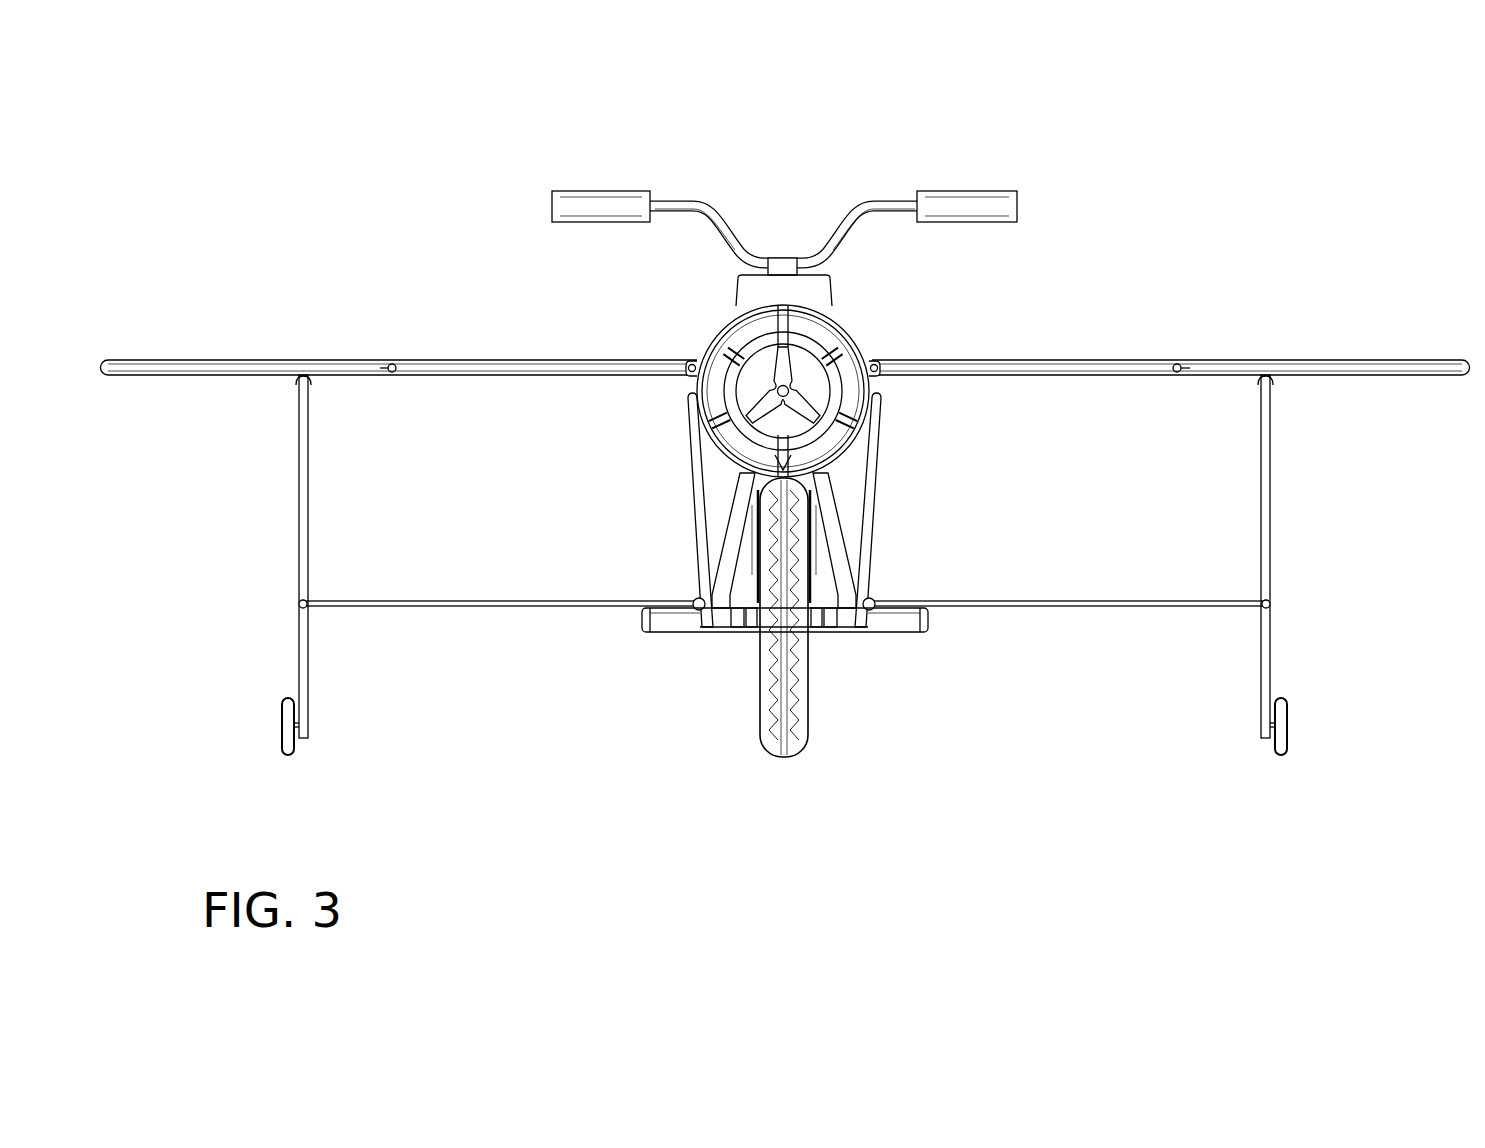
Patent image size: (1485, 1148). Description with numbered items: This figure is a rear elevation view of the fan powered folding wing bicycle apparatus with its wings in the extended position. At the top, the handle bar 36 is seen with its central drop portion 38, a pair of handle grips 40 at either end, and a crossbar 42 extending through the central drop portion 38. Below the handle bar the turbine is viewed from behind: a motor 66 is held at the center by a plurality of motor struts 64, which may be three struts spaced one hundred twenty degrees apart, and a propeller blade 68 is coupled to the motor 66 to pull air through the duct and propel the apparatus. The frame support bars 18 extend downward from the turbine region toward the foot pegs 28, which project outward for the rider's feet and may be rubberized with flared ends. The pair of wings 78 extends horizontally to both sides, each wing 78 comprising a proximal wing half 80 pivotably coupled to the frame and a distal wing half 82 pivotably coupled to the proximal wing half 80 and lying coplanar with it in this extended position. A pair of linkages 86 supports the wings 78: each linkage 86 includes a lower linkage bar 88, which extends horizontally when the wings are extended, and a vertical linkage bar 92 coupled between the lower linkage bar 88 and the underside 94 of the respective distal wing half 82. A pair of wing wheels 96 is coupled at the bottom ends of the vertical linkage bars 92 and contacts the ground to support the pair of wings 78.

The frame support bars 18 is at (870, 489).
The foot peg 28 is at (674, 623).
The handle bar 36 is at (960, 203).
The central drop portion 38 is at (745, 266).
The handle grips 40 is at (580, 208).
The crossbar 42 is at (805, 220).
The motor struts 64 is at (810, 410).
The motor 66 is at (768, 394).
The propeller blade 68 is at (757, 376).
The wings 78 is at (466, 364).
The proximal wing half 80 is at (1055, 364).
The distal wing half 82 is at (1325, 365).
The linkages 86 is at (392, 533).
The lower linkage bar 88 is at (1136, 606).
The vertical linkage bar 92 is at (1264, 528).
The underside 94 is at (1212, 376).
The wing wheels 96 is at (1288, 728).